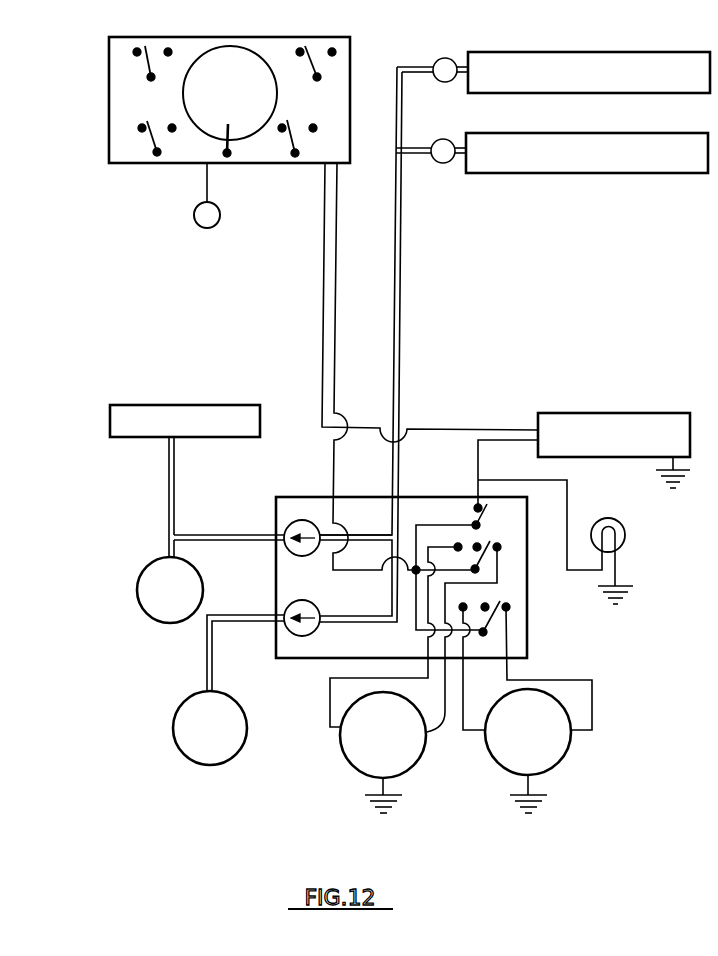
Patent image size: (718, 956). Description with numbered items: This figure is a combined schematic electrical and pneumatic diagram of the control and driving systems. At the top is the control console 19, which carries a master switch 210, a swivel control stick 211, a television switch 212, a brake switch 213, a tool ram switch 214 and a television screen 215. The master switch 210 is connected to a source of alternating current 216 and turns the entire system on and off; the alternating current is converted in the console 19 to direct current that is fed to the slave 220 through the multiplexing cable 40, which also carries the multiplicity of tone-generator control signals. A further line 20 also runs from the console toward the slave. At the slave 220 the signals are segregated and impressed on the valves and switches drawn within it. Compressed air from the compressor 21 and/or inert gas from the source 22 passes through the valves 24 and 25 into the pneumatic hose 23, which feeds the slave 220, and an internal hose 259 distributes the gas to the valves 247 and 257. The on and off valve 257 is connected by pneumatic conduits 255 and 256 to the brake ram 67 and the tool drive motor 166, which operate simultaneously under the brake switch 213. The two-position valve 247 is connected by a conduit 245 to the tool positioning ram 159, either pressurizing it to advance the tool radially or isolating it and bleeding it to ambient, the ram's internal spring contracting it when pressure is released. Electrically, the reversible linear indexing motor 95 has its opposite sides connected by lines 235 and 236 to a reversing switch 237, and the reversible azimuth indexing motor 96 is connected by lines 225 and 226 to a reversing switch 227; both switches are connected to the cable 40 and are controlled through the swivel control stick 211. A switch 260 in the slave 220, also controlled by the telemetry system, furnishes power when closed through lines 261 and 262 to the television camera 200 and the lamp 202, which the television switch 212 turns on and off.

The control console 19 is at (199, 32).
The television screen 215 is at (243, 102).
The brake switch 213 is at (150, 77).
The tool ram switch 214 is at (317, 77).
The master switch 210 is at (157, 152).
The swivel control stick 211 is at (227, 153).
The television switch 212 is at (297, 153).
The source of alternating current 216 is at (207, 228).
The compressor 21 is at (594, 81).
The source of inert gas 22 is at (566, 164).
The valve 24 is at (443, 58).
The valve 25 is at (442, 164).
The pneumatic hose 23 is at (400, 316).
The line 20 is at (322, 252).
The multiplexing cable 40 is at (335, 268).
The brake ram 67 is at (189, 428).
The pneumatic conduit 255 is at (174, 502).
The pneumatic conduit 256 is at (205, 533).
The tool drive motor 166 is at (185, 599).
The slave 220 is at (411, 492).
The on and off valve 257 is at (298, 556).
The valve 247 is at (305, 628).
The internal hose 259 is at (390, 584).
The conduit 245 is at (213, 663).
The tool positioning ram 159 is at (225, 737).
The switch 260 is at (472, 515).
The line 261 is at (505, 441).
The line 262 is at (567, 522).
The lamp 202 is at (623, 533).
The television camera 200 is at (692, 440).
The reversing switch 237 is at (483, 558).
The reversing switch 227 is at (493, 619).
The line 236 is at (330, 697).
The line 235 is at (433, 732).
The line 226 is at (463, 712).
The line 225 is at (550, 679).
The linear indexing motor 95 is at (370, 745).
The azimuth indexing motor 96 is at (515, 742).